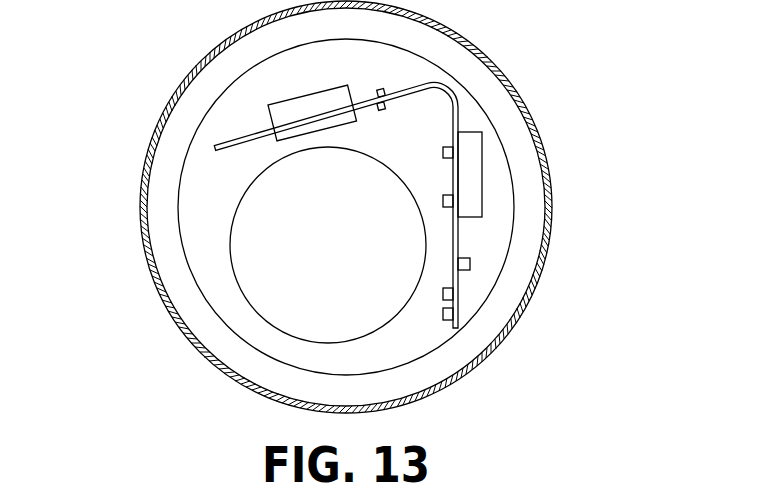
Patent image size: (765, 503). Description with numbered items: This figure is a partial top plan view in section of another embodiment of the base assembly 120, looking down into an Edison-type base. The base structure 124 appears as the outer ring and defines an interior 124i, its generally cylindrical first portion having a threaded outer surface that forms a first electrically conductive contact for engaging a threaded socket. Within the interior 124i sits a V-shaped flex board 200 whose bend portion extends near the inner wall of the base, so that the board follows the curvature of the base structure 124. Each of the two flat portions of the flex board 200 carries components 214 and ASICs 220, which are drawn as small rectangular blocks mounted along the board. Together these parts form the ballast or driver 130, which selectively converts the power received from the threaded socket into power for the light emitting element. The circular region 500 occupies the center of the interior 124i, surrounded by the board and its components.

The base assembly 120 is at (343, 207).
The base structure 124 is at (553, 207).
The interior 124i is at (260, 336).
The ballast or driver 130 is at (395, 232).
The flex board 200 is at (169, 236).
The components 214 is at (443, 151).
The ASICs 220 is at (270, 119).
The central element 500 is at (347, 254).